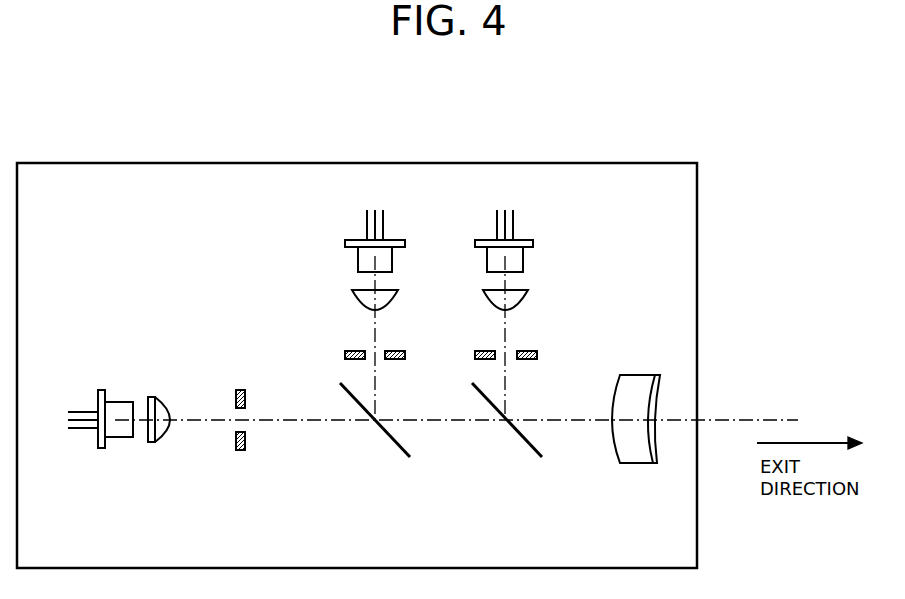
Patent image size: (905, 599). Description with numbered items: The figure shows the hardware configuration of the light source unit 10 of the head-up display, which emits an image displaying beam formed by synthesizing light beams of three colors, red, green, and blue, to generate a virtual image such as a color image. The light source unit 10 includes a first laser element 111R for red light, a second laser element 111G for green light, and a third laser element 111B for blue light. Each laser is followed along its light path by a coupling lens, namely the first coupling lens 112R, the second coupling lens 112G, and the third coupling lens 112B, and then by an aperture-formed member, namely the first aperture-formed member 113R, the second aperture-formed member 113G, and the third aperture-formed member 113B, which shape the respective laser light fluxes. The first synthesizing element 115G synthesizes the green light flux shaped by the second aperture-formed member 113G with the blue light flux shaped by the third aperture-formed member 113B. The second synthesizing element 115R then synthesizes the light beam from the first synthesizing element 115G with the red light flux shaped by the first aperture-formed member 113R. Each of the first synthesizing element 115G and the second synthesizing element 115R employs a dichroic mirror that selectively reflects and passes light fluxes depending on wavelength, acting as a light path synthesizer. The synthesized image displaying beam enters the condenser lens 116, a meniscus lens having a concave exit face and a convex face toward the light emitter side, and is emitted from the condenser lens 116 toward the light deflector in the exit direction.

The light source unit 10 is at (639, 148).
The third laser element 111B is at (116, 400).
The third coupling lens 112B is at (155, 443).
The third aperture-formed member 113B is at (240, 451).
The second laser element 111G is at (358, 260).
The second coupling lens 112G is at (352, 297).
The second aperture-formed member 113G is at (345, 355).
The first synthesizing element 115G is at (388, 438).
The first laser element 111R is at (523, 260).
The first coupling lens 112R is at (528, 297).
The first aperture-formed member 113R is at (537, 355).
The second synthesizing element 115R is at (520, 438).
The condenser lens 116 is at (640, 464).